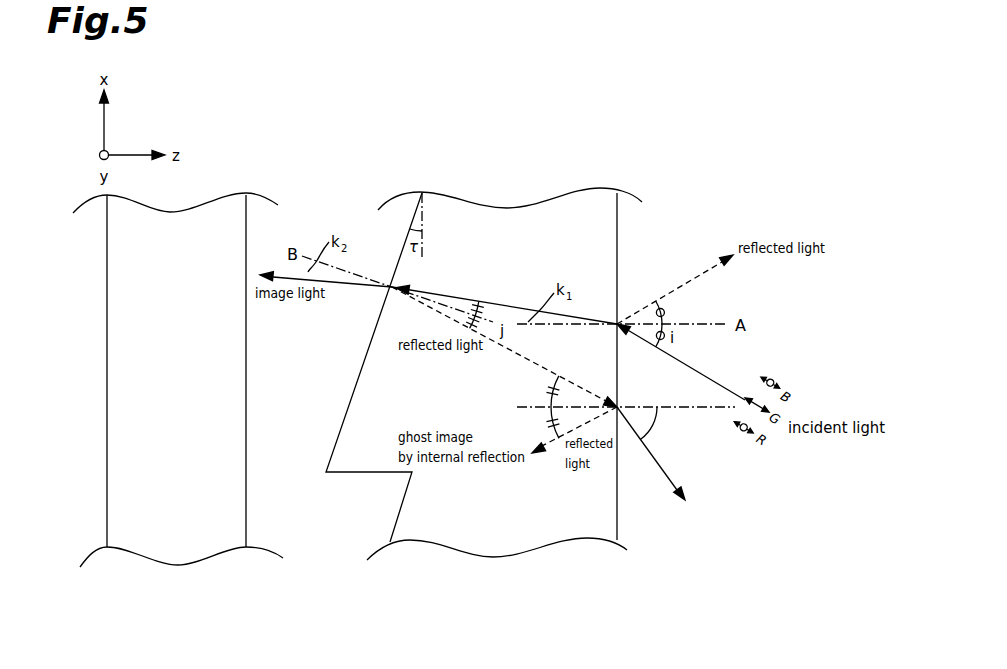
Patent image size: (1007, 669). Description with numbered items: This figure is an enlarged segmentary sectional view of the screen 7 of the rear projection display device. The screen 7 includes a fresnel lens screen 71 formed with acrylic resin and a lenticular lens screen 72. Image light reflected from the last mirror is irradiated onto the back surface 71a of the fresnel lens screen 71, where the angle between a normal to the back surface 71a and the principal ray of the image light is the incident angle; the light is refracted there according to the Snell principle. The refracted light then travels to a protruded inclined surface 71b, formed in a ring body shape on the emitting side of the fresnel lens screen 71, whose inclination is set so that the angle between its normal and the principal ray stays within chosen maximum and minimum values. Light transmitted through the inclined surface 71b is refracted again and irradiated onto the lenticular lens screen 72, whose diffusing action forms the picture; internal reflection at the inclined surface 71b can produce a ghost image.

The screen 7 is at (490, 347).
The fresnel lens screen 71 is at (490, 401).
The back surface 71a is at (617, 253).
The protruded inclined surface 71b is at (352, 392).
The lenticular lens screen 72 is at (247, 567).